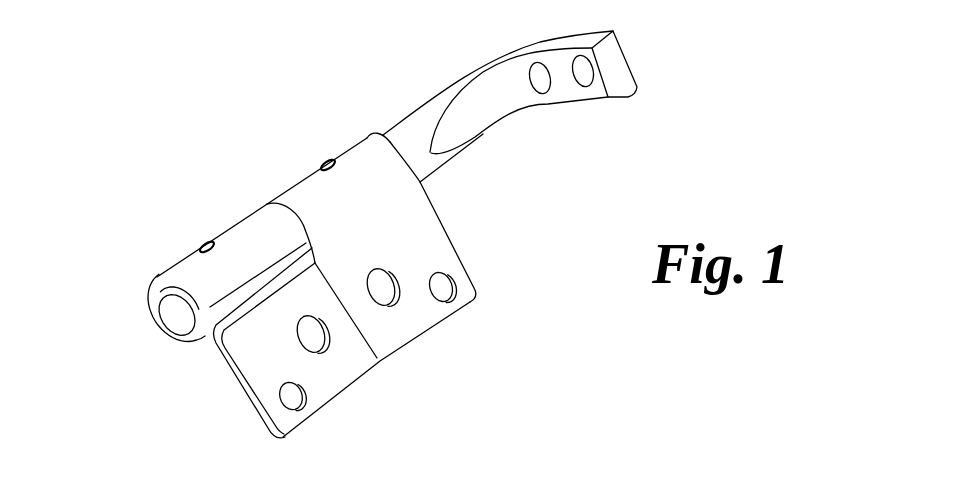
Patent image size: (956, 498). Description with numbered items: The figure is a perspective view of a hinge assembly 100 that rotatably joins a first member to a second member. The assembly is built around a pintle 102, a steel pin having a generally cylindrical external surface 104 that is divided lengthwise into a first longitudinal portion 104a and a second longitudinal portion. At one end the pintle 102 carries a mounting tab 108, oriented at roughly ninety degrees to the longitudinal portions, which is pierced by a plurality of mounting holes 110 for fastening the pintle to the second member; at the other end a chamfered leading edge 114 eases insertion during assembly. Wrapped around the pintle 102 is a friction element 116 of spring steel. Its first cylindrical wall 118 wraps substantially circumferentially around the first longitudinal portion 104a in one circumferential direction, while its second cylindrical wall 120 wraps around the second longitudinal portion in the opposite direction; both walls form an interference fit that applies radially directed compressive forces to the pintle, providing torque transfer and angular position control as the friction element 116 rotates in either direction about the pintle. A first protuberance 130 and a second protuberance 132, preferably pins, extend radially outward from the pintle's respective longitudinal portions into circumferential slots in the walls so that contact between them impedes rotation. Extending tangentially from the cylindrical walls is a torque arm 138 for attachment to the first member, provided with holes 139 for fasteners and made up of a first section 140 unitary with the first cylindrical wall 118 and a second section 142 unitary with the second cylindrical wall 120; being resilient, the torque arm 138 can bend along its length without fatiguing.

The hinge assembly 100 is at (190, 112).
The pintle 102 is at (400, 110).
The cylindrical external surface 104 is at (202, 345).
The first longitudinal portion 104a is at (267, 283).
The mounting tab 108 is at (640, 85).
The mounting holes 110 is at (545, 93).
The chamfered leading edge 114 is at (173, 301).
The friction element 116 is at (265, 190).
The first cylindrical wall 118 is at (183, 262).
The second cylindrical wall 120 is at (362, 153).
The first protuberance 130 is at (204, 243).
The second protuberance 132 is at (330, 160).
The torque arm 138 is at (398, 385).
The holes 139 is at (397, 300).
The first section 140 is at (255, 412).
The second section 142 is at (443, 218).